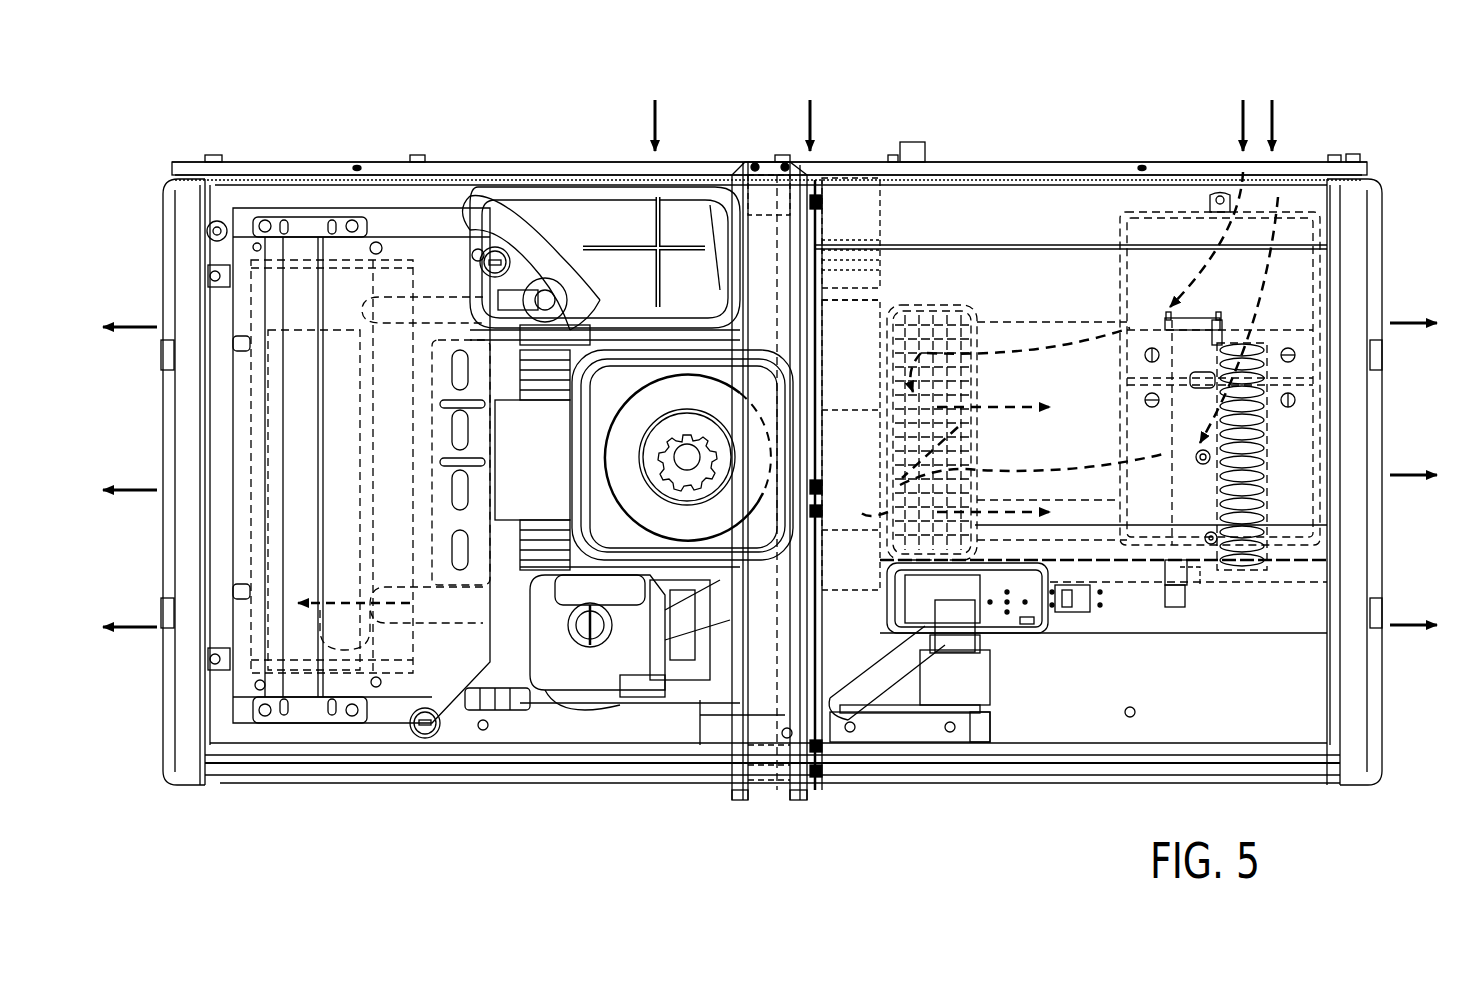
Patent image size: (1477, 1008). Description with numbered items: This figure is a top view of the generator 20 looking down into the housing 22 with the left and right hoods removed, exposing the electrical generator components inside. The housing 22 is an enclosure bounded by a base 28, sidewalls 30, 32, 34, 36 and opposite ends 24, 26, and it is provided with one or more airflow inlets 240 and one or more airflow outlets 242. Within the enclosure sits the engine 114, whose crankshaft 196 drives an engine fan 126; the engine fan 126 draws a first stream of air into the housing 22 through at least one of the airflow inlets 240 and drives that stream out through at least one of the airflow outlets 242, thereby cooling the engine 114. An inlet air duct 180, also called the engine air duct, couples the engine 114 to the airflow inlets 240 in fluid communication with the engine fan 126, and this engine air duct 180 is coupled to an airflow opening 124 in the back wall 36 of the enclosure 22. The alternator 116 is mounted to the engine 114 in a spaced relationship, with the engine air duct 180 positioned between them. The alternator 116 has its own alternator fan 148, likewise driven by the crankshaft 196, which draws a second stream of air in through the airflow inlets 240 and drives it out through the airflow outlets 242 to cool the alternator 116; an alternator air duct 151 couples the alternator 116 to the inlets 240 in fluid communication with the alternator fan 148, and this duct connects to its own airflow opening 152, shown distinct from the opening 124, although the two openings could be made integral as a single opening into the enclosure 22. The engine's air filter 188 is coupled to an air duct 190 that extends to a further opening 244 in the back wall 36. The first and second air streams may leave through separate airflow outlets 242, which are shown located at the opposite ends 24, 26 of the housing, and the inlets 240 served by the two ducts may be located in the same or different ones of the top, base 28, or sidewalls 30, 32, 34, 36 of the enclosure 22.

The generator 20 is at (1292, 104).
The housing 22 is at (1300, 137).
The end of the housing 24 is at (1394, 596).
The end of the housing 26 is at (143, 533).
The base 28 is at (1305, 730).
The sidewall 30 is at (1352, 682).
The sidewall 32 is at (188, 722).
The sidewall 34 is at (358, 767).
The back wall 36 is at (386, 161).
The engine 114 is at (562, 714).
The alternator 116 is at (1083, 388).
The airflow opening 124 is at (770, 149).
The engine fan 126 is at (977, 435).
The alternator fan 148 is at (1268, 440).
The alternator air duct 151 is at (944, 283).
The airflow opening 152 is at (1213, 150).
The inlet air duct 180 is at (857, 165).
The air filter 188 is at (614, 386).
The air duct 190 is at (618, 220).
The crankshaft 196 is at (928, 577).
The airflow inlet 240 is at (674, 117).
The airflow outlet 242 is at (141, 400).
The opening 244 is at (516, 154).